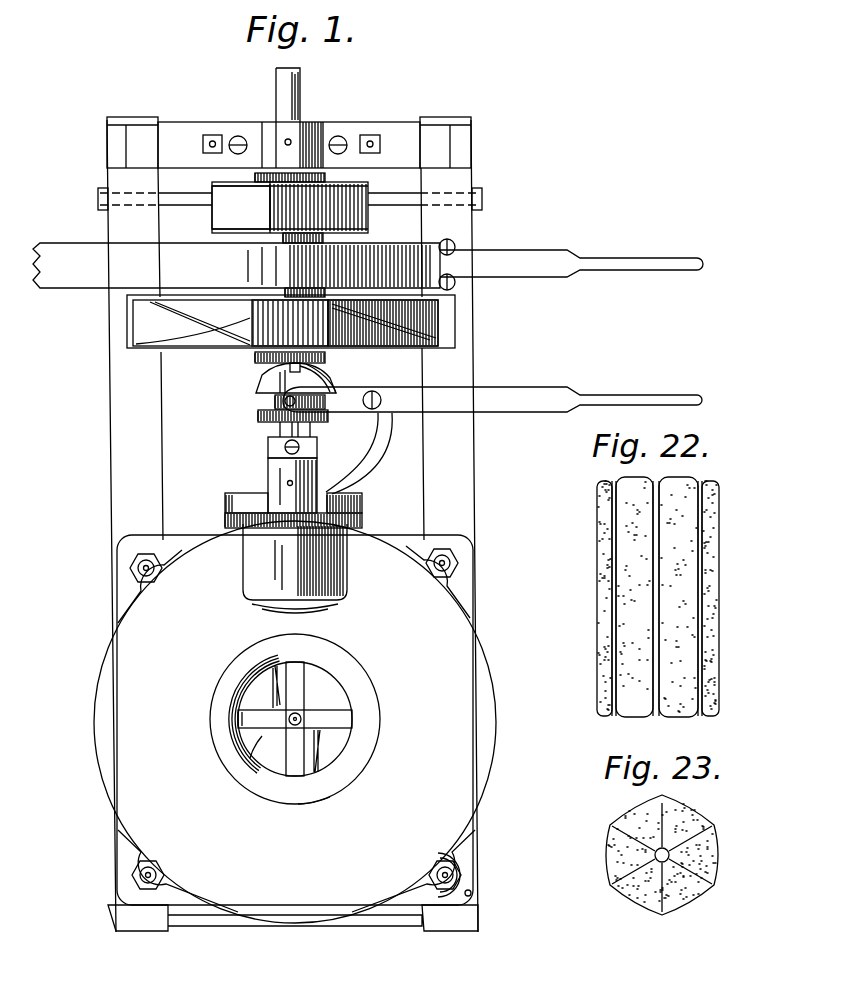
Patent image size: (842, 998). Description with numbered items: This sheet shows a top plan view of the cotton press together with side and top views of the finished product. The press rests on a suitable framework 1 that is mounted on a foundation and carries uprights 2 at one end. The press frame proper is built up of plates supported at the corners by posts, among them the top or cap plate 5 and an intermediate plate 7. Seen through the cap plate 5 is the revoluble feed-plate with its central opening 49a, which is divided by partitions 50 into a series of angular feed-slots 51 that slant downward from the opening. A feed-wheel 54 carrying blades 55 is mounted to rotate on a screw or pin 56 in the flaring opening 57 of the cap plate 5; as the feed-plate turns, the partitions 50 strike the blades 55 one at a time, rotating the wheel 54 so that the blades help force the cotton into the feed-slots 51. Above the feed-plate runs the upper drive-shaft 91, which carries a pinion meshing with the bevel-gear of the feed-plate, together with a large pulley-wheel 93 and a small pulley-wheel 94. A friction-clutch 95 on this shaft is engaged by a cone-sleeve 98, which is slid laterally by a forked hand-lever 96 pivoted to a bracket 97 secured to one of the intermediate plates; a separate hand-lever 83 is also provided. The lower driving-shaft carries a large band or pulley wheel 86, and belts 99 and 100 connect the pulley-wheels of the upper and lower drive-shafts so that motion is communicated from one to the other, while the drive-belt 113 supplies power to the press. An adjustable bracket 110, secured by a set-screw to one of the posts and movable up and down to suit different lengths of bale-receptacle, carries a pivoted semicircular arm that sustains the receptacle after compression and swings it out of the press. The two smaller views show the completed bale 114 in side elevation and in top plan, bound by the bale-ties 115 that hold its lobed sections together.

In FIG. 1, the framework 1 is at (108, 511).
In FIG. 1, the uprights 2 is at (372, 126).
In FIG. 1, the top or cap plate 5 is at (485, 729).
In FIG. 1, the intermediate plate 7 is at (466, 598).
In FIG. 1, the central opening 49a is at (345, 696).
In FIG. 1, the partitions 50 is at (355, 729).
In FIG. 1, the feed-slots 51 is at (284, 672).
In FIG. 1, the feed-wheel 54 is at (242, 700).
In FIG. 1, the blades 55 is at (246, 719).
In FIG. 1, the screw or pin 56 is at (250, 732).
In FIG. 1, the flaring opening 57 is at (313, 800).
In FIG. 1, the hand-lever 83 is at (562, 250).
In FIG. 1, the large band or pulley wheel 86 is at (227, 350).
In FIG. 1, the upper drive-shaft 91 is at (282, 431).
In FIG. 1, the large pulley-wheel 93 is at (437, 298).
In FIG. 1, the small pulley-wheel 94 is at (360, 185).
In FIG. 1, the friction-clutch 95 is at (320, 361).
In FIG. 1, the forked hand-lever 96 is at (548, 389).
In FIG. 1, the bracket 97 is at (377, 454).
In FIG. 1, the cone-sleeve 98 is at (262, 386).
In FIG. 1, the belt 99 is at (137, 331).
In FIG. 1, the belt 100 is at (226, 215).
In FIG. 1, the adjustable bracket 110 is at (468, 870).
In FIG. 1, the drive-belt 113 is at (236, 265).
In FIG. 22, the bale 114 is at (718, 586).
In FIG. 23, the bale 114 is at (690, 821).
In FIG. 22, the bale-ties 115 is at (712, 610).
In FIG. 23, the bale-ties 115 is at (712, 829).